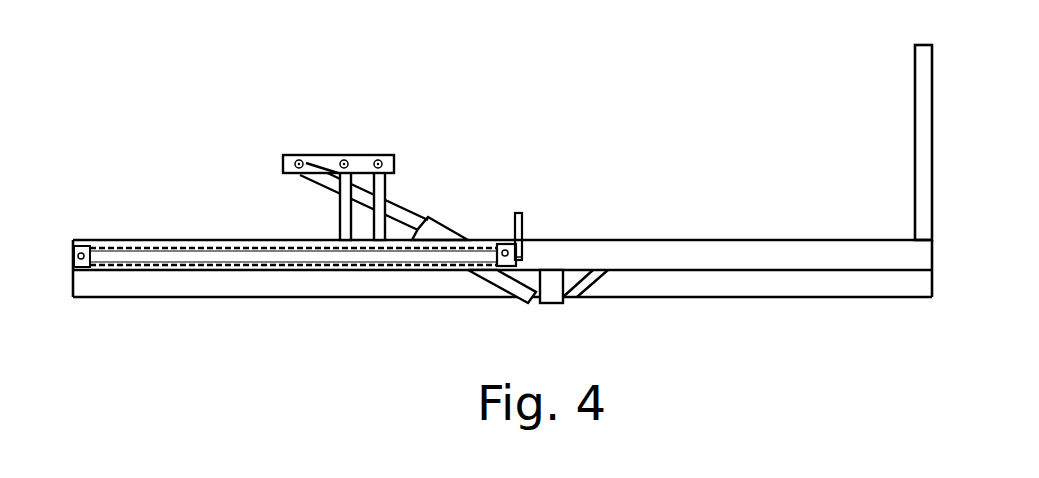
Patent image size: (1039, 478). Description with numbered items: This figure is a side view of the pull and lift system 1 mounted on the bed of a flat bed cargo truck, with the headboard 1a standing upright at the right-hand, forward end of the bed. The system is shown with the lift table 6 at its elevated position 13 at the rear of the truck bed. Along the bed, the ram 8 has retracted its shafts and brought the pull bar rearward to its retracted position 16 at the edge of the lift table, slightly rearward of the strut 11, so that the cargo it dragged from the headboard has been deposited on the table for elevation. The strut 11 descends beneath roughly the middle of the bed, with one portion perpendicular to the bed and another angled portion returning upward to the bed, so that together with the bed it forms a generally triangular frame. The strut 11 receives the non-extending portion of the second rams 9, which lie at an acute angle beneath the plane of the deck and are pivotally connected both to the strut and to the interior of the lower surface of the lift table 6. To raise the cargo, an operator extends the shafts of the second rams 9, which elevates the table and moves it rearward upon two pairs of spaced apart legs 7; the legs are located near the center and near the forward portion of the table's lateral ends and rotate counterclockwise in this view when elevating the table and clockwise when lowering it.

The pull and lift system 1 is at (826, 48).
The headboard 1a is at (925, 140).
The lift table 6 is at (312, 155).
The legs 7 is at (345, 219).
The ram 8 is at (232, 256).
The second rams 9 is at (502, 288).
The strut 11 is at (587, 297).
The elevated position 13 is at (394, 140).
The retracted position 16 is at (518, 213).